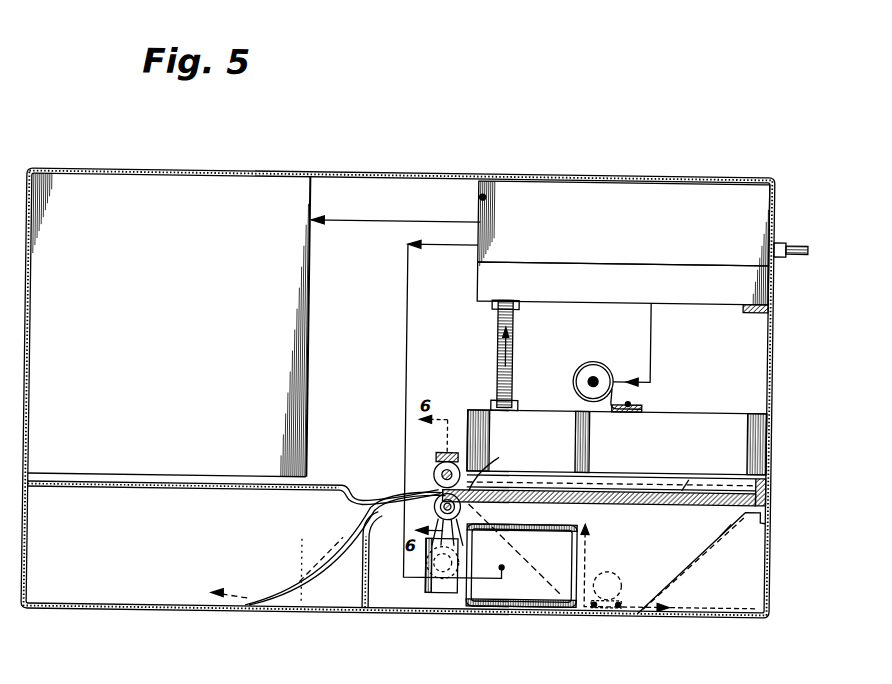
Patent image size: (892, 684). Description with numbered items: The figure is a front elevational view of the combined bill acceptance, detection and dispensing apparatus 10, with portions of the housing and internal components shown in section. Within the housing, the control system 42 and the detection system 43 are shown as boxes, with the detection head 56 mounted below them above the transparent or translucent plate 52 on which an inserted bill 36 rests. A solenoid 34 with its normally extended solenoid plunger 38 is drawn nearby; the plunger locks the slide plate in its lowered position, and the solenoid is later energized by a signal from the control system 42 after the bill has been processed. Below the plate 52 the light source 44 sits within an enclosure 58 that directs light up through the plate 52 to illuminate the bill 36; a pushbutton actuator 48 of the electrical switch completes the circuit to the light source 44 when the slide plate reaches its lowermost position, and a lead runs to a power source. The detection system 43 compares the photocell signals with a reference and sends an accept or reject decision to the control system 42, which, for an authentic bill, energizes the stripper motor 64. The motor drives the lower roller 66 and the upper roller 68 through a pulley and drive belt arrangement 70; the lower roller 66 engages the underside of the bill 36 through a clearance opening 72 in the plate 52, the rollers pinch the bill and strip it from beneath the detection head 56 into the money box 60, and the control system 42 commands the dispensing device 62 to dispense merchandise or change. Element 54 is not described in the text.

The combined bill acceptance, detection and dispensing apparatus 10 is at (404, 163).
The solenoid 34 is at (598, 364).
The bill 36 is at (600, 485).
The solenoid plunger 38 is at (574, 386).
The control system 42 is at (624, 225).
The detection system 43 is at (623, 287).
The light source 44 is at (619, 573).
The pushbutton actuator 48 is at (612, 558).
The transparent or translucent plate 52 is at (733, 537).
The guide plate 54 is at (690, 476).
The detection head 56 is at (617, 442).
The enclosure 58 is at (694, 560).
The money box 60 is at (150, 596).
The dispensing device 62 is at (169, 325).
The stripper motor 64 is at (531, 598).
The lower roller 66 is at (404, 493).
The upper roller 68 is at (435, 468).
The pulley and drive belt arrangement 70 is at (428, 522).
The clearance opening 72 is at (493, 466).